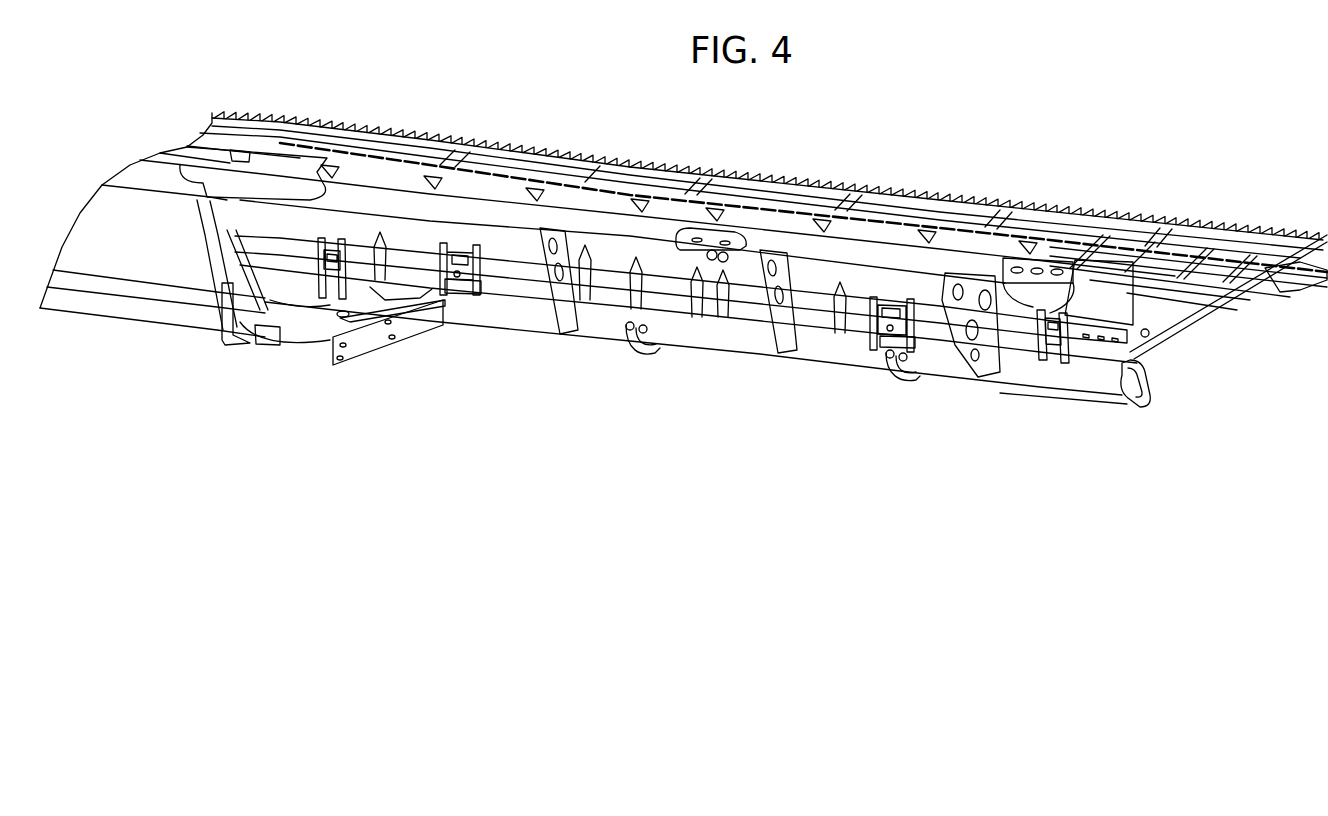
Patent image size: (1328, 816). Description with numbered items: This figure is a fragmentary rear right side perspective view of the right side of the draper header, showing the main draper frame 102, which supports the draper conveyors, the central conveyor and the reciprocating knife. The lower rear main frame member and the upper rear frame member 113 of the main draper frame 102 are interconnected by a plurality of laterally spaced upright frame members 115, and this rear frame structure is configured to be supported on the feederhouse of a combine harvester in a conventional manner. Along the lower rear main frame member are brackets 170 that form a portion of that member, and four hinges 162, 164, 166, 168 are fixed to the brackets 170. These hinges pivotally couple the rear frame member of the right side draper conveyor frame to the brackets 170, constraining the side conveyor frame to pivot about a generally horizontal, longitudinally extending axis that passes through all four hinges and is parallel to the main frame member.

The main draper frame 102 is at (585, 343).
The upper rear frame member 113 is at (873, 235).
The upright frame members 115 is at (577, 320).
The hinge 162 is at (330, 337).
The hinge 164 is at (490, 290).
The hinge 166 is at (917, 345).
The hinge 168 is at (1055, 347).
The brackets 170 is at (307, 340).